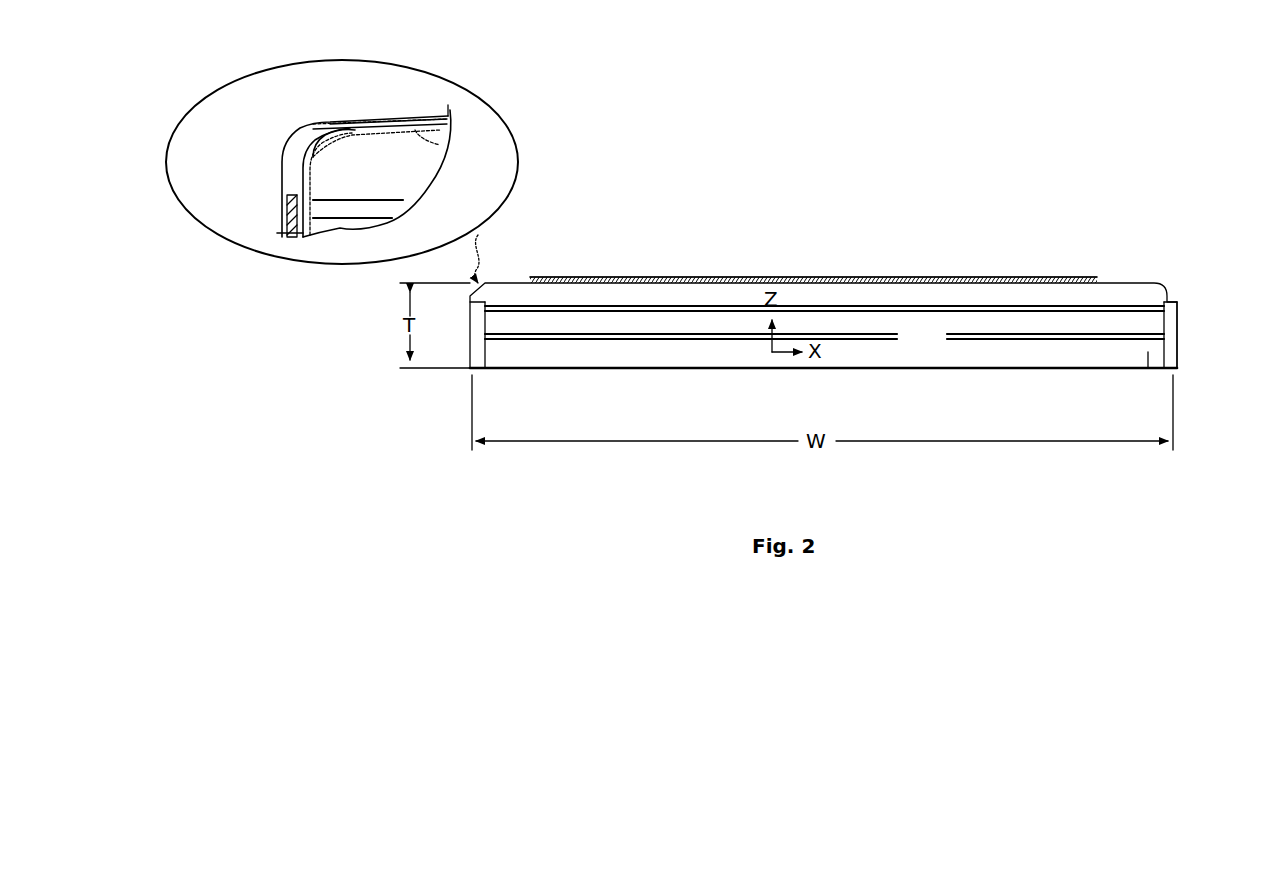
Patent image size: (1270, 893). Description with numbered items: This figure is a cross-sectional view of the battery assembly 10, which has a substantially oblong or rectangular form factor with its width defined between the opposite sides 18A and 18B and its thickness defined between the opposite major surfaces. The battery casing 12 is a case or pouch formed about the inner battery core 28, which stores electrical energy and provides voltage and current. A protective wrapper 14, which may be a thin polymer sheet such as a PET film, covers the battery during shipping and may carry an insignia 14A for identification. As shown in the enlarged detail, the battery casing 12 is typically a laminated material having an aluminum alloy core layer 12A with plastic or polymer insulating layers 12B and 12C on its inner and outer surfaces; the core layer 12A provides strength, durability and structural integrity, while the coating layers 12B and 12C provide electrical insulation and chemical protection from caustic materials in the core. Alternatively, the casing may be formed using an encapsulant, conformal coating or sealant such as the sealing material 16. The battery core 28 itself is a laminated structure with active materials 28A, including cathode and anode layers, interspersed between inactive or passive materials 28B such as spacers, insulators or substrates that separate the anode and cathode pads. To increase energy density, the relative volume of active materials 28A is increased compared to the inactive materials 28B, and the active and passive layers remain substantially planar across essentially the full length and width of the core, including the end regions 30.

The battery assembly 10 is at (1022, 180).
The battery casing 12 is at (597, 278).
The core layer 12A is at (312, 157).
The insulating layer 12B is at (345, 130).
The insulating layer 12C is at (420, 140).
The protective wrapper 14 is at (698, 277).
The insignia 14A is at (884, 277).
The sealing material 16 is at (1170, 300).
The side 18A is at (467, 348).
The side 18B is at (1180, 327).
The battery core 28 is at (733, 270).
The active materials 28A is at (722, 300).
The inactive materials 28B is at (1008, 342).
The end regions 30 is at (1148, 353).